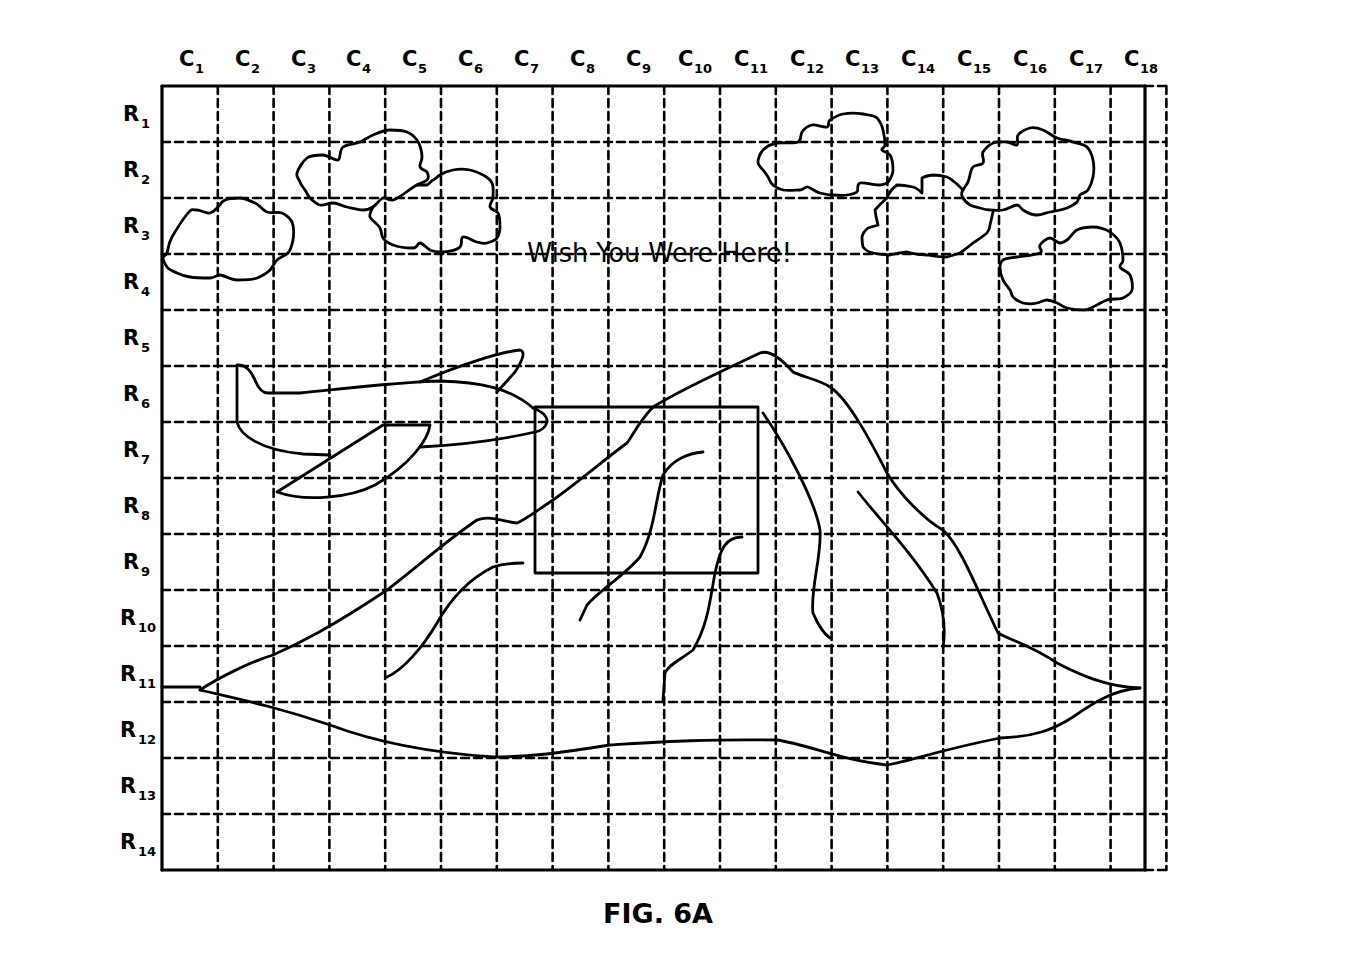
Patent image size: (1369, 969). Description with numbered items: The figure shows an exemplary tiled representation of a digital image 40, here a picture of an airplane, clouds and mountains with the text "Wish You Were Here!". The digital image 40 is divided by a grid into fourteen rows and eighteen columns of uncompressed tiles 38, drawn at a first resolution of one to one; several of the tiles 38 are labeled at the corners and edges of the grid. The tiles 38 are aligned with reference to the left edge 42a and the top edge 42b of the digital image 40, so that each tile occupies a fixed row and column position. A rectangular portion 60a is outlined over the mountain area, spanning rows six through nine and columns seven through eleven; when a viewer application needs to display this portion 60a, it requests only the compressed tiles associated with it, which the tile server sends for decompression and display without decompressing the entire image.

The uncompressed tiles 38 is at (191, 125).
The digital image 40 is at (1292, 95).
The left edge 42a is at (162, 303).
The top edge 42b is at (1145, 86).
The portion 60a is at (593, 405).